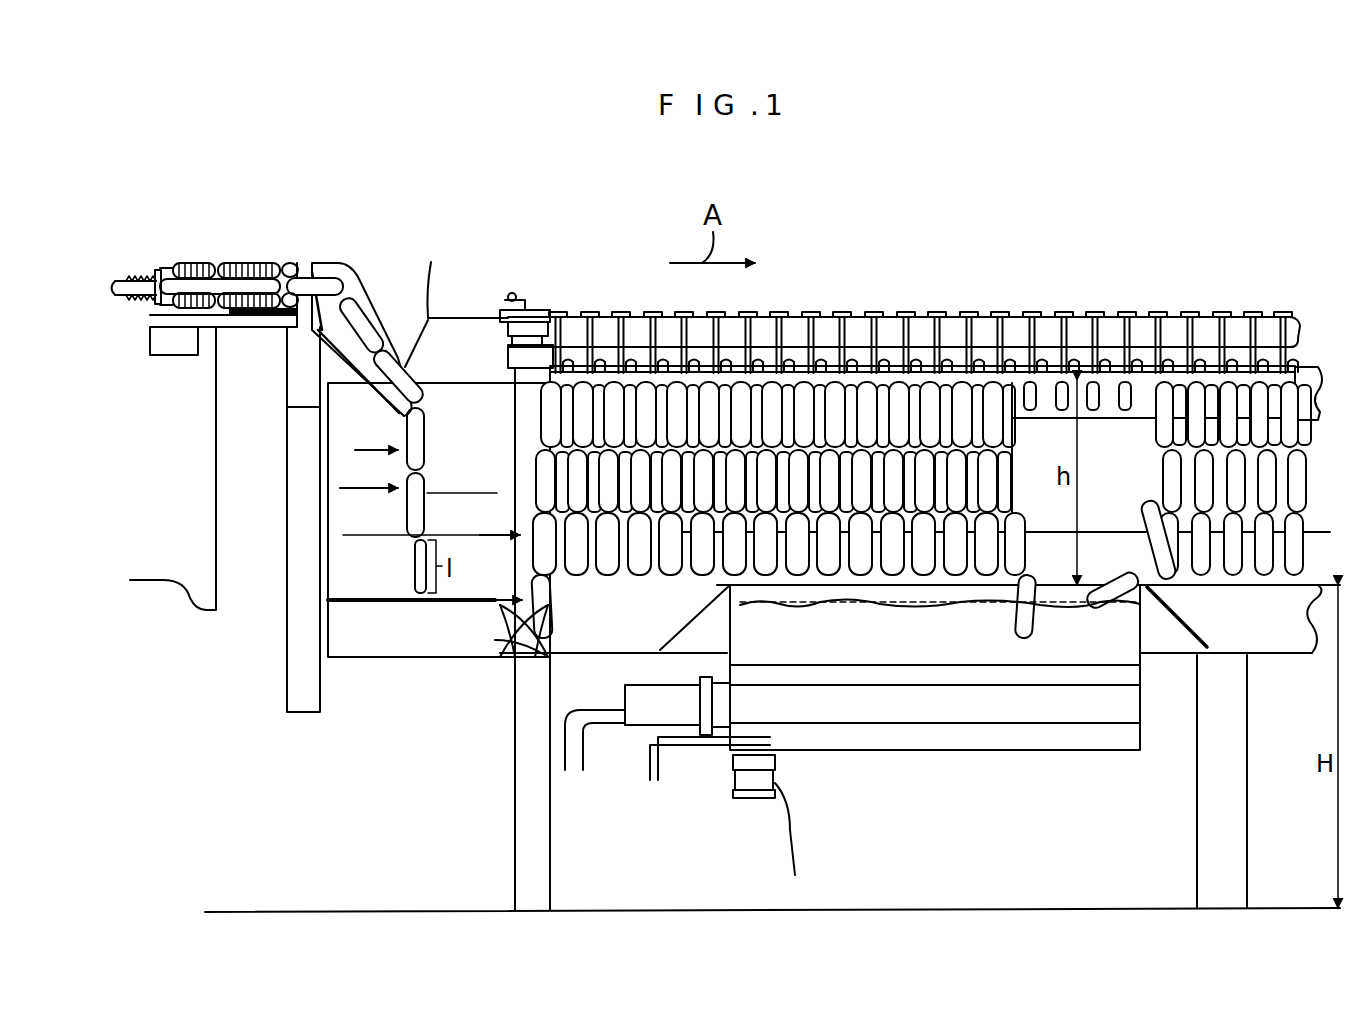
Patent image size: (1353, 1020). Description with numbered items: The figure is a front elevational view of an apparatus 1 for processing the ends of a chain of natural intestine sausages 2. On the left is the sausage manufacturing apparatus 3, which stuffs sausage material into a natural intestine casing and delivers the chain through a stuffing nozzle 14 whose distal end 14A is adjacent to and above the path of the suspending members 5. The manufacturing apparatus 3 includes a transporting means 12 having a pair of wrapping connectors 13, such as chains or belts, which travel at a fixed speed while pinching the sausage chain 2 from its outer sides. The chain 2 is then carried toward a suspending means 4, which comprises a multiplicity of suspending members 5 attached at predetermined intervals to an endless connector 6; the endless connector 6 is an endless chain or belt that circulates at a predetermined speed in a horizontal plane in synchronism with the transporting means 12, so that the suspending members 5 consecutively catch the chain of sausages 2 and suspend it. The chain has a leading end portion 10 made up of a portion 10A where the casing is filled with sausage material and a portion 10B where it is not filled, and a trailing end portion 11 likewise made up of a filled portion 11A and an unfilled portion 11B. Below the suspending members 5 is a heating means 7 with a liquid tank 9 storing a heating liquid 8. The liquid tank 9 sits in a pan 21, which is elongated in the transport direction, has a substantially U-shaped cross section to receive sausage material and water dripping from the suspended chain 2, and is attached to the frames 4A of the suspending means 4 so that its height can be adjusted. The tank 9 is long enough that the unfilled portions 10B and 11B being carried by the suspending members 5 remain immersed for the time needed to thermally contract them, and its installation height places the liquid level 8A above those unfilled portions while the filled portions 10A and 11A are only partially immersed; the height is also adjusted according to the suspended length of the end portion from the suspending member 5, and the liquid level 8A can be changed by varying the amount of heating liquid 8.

The apparatus for processing ends of a chain of natural intestine sausages 1 is at (928, 835).
The chain of natural intestine sausages 2 is at (1150, 478).
The sausage manufacturing apparatus 3 is at (240, 256).
The suspending means 4 is at (1004, 282).
The frames 4A is at (950, 335).
The suspending members 5 is at (1257, 335).
The endless connector 6 is at (520, 297).
The heating means 7 is at (1106, 753).
The heating liquid 8 is at (1140, 668).
The liquid level 8A is at (1140, 668).
The liquid tank 9 is at (1140, 690).
The leading end portion 10 is at (405, 503).
The portion where sausage material is filled 10A is at (420, 537).
The portion where sausage material is not filled 10B is at (420, 567).
The trailing end portion 11 is at (468, 655).
The portion where sausage material is filled 11A is at (500, 665).
The portion where sausage material is not filled 11B is at (512, 660).
The transporting means 12 is at (282, 259).
The wrapping connectors 13 is at (183, 266).
The stuffing nozzle 14 is at (129, 287).
The distal end 14A is at (178, 305).
The pan 21 is at (370, 640).